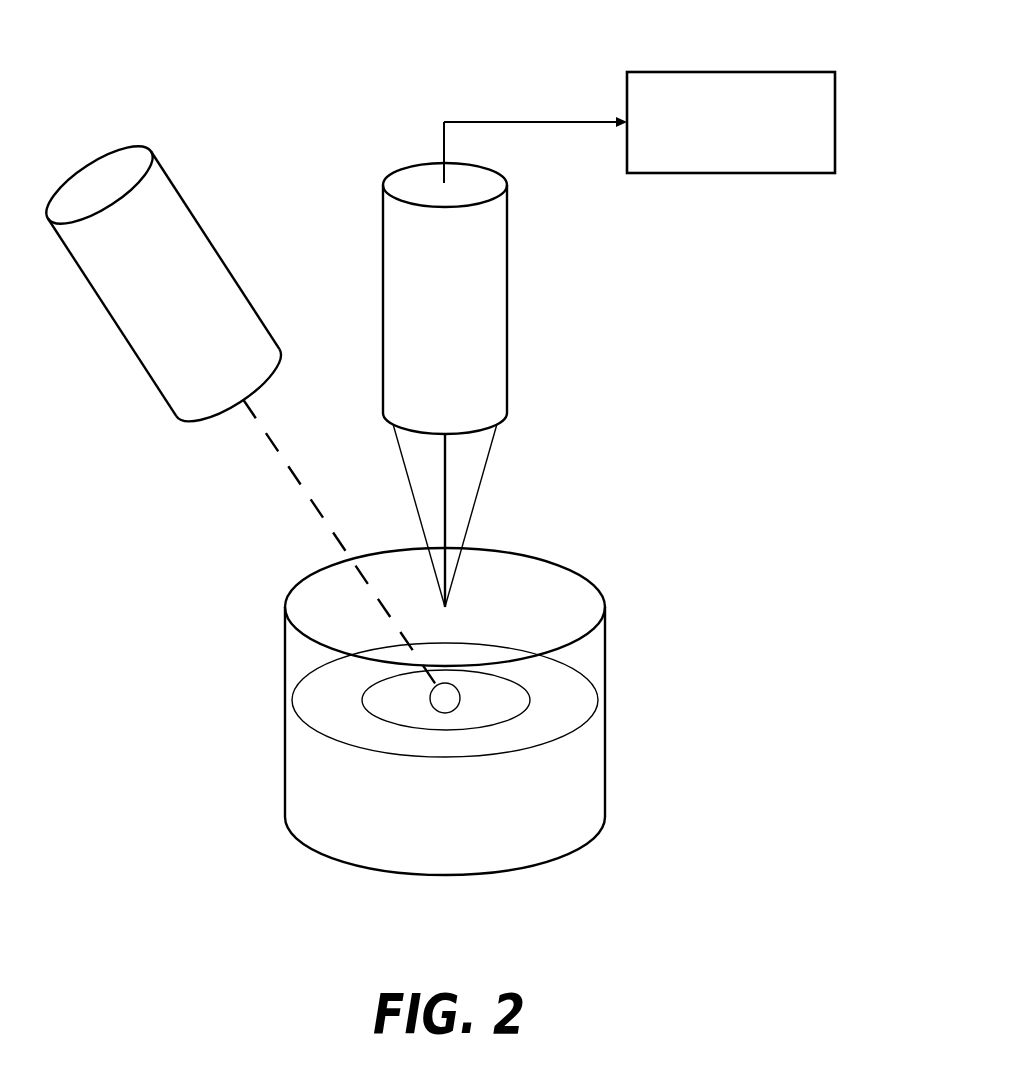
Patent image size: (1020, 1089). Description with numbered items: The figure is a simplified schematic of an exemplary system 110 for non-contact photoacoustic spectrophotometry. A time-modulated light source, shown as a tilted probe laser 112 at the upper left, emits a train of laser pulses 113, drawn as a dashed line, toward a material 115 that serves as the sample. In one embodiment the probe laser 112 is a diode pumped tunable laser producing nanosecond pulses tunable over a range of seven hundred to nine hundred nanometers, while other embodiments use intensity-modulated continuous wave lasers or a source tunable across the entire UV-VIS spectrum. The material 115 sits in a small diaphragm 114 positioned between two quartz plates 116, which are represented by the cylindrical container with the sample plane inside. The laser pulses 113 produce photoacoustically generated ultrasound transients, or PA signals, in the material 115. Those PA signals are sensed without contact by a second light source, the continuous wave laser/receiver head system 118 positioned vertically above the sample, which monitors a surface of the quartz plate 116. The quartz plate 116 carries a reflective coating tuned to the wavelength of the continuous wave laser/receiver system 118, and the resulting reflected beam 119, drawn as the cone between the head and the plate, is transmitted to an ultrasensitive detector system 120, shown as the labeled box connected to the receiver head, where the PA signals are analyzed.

The system for non-contact photoacoustic spectrophotometry 110 is at (608, 67).
The probe laser 112 is at (112, 307).
The laser pulses 113 is at (290, 470).
The diaphragm 114 is at (513, 695).
The material 115 is at (432, 697).
The quartz plate 116 is at (583, 572).
The continuous wave laser/receiver head system 118 is at (503, 287).
The reflected beam 119 is at (476, 490).
The detector system 120 is at (835, 118).